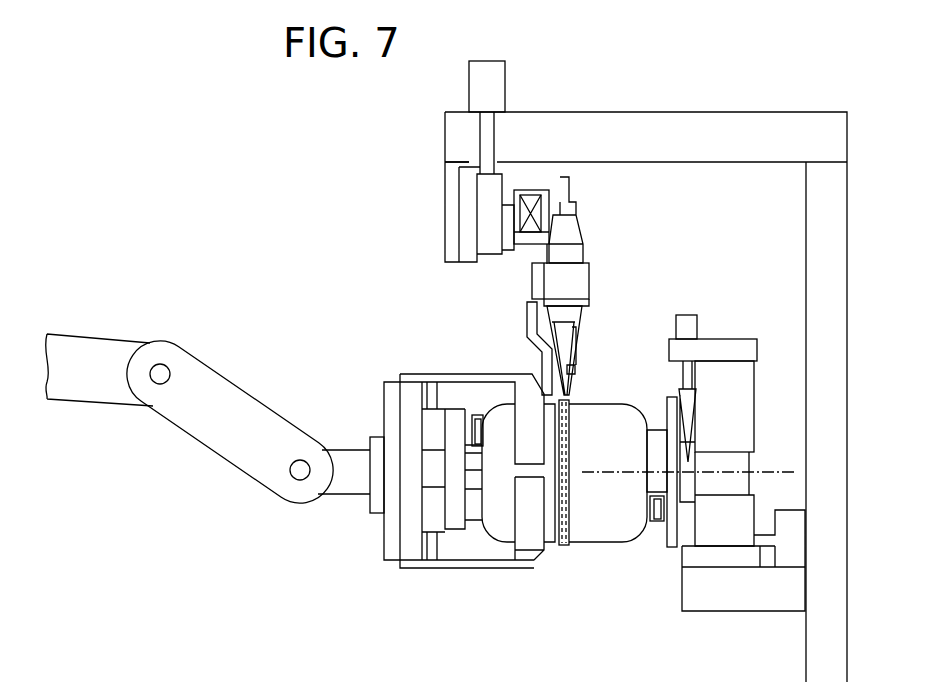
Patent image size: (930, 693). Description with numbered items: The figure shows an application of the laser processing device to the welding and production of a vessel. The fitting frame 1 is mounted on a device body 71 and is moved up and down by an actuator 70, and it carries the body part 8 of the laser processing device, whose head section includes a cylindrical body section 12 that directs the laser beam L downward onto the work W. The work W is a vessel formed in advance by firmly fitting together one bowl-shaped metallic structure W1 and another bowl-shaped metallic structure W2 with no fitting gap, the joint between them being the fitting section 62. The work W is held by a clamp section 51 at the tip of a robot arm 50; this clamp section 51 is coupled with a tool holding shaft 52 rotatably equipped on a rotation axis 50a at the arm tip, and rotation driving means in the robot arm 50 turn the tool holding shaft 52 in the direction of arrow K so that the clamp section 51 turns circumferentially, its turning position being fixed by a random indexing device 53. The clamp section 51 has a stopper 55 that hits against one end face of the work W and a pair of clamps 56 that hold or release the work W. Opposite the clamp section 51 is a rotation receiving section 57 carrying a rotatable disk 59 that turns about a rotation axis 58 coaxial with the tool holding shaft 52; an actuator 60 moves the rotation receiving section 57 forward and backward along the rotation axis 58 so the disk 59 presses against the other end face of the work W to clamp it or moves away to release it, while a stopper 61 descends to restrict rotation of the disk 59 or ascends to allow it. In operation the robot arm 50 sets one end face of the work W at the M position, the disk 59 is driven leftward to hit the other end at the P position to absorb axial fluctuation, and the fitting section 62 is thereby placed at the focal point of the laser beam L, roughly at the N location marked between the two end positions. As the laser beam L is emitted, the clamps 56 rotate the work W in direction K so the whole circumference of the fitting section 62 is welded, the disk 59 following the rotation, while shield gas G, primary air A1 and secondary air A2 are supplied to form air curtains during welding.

The fitting frame 1 is at (465, 195).
The body part of the laser processing device 8 is at (580, 226).
The cylindrical body section 12 is at (576, 272).
The robot arm 50 is at (142, 423).
The rotation axis 50a is at (287, 468).
The clamp section 51 is at (393, 572).
The tool holding shaft 52 is at (343, 478).
The random indexing device 53 is at (475, 412).
The stopper 55 is at (453, 514).
The clamps 56 is at (396, 372).
The rotation receiving section 57 is at (735, 529).
The rotation axis 58 is at (767, 470).
The disk 59 is at (664, 412).
The actuator 60 is at (790, 530).
The stopper 61 is at (692, 325).
The fitting section 62 is at (570, 521).
The actuator 70 is at (488, 80).
The device body 71 is at (813, 254).
The primary air A1 is at (548, 365).
The secondary air A2 is at (560, 282).
The shield gas G is at (553, 375).
The direction of rotation K is at (353, 468).
The laser beam L is at (571, 322).
The M position M is at (480, 540).
The position N is at (563, 548).
The P position P is at (647, 548).
The work W is at (598, 430).
The metallic structure W1 is at (505, 521).
The metallic structure W2 is at (608, 524).